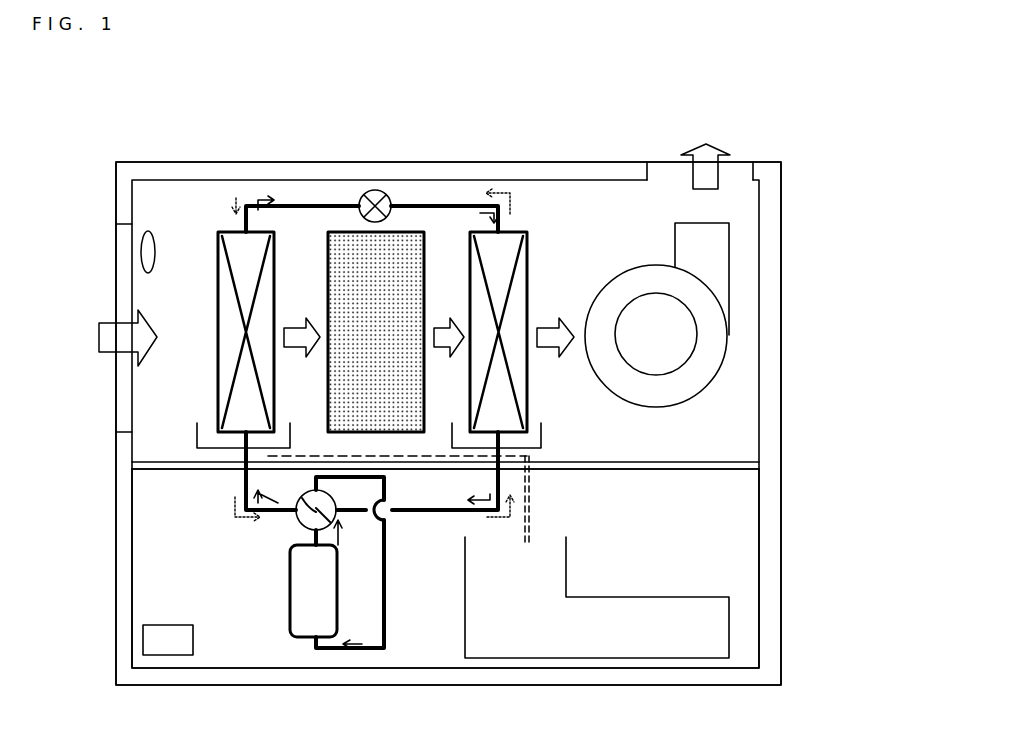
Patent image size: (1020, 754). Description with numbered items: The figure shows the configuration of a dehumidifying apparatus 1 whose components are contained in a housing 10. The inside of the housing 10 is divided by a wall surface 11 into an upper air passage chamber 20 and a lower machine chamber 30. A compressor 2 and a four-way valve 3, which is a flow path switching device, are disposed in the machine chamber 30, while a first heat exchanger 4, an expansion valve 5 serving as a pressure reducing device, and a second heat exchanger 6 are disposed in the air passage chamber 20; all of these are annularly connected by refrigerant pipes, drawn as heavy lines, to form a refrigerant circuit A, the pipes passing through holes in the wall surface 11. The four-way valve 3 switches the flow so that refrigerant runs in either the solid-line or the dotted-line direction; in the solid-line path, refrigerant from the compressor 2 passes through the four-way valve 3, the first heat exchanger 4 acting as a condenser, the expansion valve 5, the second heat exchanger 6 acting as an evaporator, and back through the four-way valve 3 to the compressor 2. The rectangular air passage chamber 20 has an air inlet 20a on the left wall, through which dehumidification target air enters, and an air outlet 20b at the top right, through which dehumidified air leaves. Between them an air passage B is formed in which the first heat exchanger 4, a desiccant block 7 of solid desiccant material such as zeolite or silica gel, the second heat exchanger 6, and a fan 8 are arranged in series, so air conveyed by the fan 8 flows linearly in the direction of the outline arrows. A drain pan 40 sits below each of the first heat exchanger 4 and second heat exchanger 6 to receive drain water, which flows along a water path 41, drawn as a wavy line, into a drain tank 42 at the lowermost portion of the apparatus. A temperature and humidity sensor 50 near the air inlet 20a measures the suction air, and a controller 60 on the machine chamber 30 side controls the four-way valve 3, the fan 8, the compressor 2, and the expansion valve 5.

The dehumidifying apparatus 1 is at (800, 118).
The housing 10 is at (776, 215).
The air passage chamber 20 is at (750, 293).
The air inlet 20a is at (122, 392).
The air outlet 20b is at (661, 162).
The wall surface 11 is at (758, 454).
The machine chamber 30 is at (722, 565).
The compressor 2 is at (290, 576).
The four-way valve 3 is at (303, 516).
The first heat exchanger 4 is at (218, 262).
The expansion valve 5 is at (372, 189).
The second heat exchanger 6 is at (528, 268).
The desiccant block 7 is at (404, 232).
The fan 8 is at (735, 340).
The drain pan 40 is at (235, 448).
The water path 41 is at (527, 518).
The drain tank 42 is at (575, 597).
The temperature and humidity sensor 50 is at (146, 256).
The controller 60 is at (176, 650).
The refrigerant circuit A is at (388, 614).
The air passage B is at (140, 203).